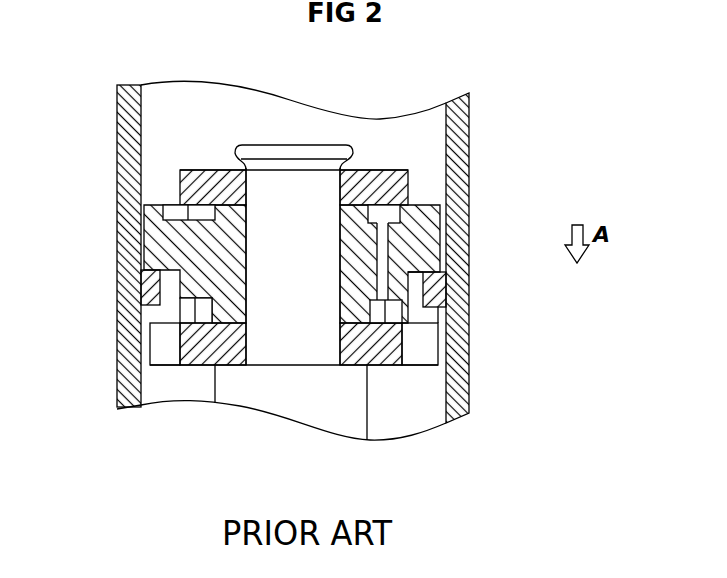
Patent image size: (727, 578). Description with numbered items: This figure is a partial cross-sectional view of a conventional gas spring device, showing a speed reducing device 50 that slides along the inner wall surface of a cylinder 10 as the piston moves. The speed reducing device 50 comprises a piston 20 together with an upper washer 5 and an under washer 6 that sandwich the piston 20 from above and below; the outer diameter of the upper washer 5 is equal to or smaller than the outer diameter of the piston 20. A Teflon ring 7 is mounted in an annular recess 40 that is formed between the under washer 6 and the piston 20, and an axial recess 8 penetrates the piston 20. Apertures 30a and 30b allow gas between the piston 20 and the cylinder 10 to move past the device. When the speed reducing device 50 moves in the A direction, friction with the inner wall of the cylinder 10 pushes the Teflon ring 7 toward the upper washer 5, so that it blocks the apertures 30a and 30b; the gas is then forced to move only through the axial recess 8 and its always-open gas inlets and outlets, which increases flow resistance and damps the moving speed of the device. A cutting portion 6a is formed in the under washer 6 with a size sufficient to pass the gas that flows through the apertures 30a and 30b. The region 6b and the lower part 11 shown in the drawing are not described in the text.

The cylinder 10 is at (118, 131).
The piston 20 is at (443, 237).
The speed reducing device 50 is at (207, 149).
The upper washer 5 is at (397, 171).
The aperture 30a is at (120, 220).
The aperture 30b is at (443, 213).
The Teflon ring 7 is at (139, 286).
The axial recess 8 is at (412, 285).
The annular recess 40 is at (148, 312).
The under washer 6 is at (380, 358).
The cutting portion 6a is at (165, 355).
The groove 6b is at (427, 349).
The base 11 is at (313, 420).